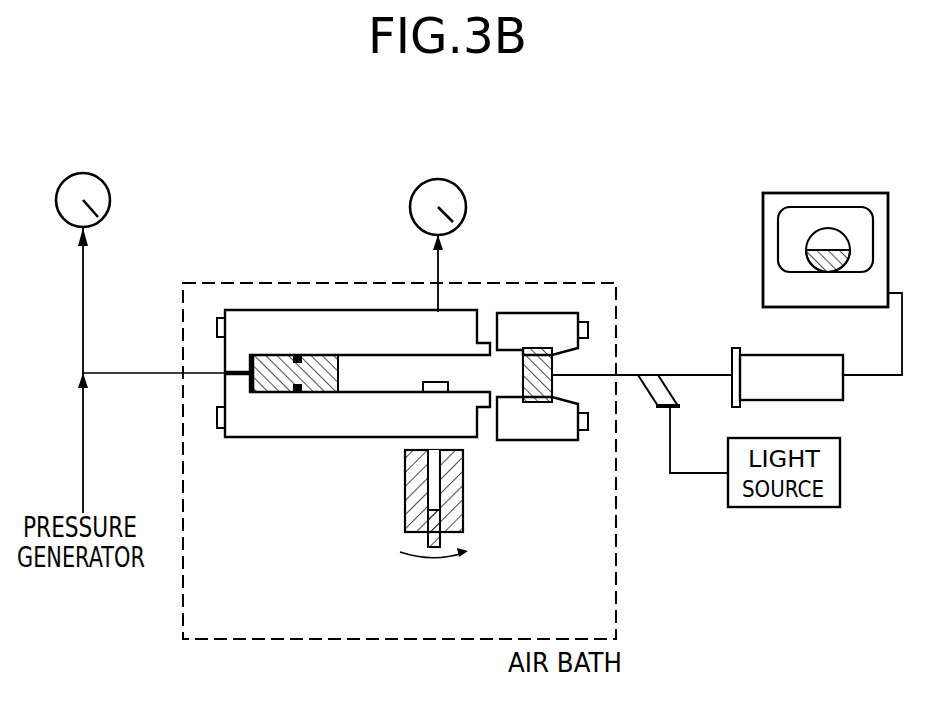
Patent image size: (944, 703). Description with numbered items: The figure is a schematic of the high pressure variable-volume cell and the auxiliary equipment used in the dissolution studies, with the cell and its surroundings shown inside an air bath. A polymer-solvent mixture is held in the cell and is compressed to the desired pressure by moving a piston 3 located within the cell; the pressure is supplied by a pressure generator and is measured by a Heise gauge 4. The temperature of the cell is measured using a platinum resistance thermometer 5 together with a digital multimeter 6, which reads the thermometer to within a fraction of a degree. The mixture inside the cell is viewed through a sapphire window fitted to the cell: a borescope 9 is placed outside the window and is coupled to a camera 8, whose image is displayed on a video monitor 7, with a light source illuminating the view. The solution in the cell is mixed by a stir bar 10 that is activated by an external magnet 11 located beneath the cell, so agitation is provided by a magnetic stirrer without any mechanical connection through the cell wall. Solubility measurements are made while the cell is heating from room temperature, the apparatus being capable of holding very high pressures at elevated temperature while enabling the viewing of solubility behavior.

The piston 3 is at (280, 355).
The Heise gauge 4 is at (108, 190).
The platinum resistance thermometer 5 is at (439, 268).
The digital multimeter 6 is at (465, 196).
The video monitor 7 is at (763, 227).
The camera 8 is at (783, 355).
The borescope 9 is at (679, 404).
The stir bar 10 is at (430, 381).
The external magnet 11 is at (465, 507).